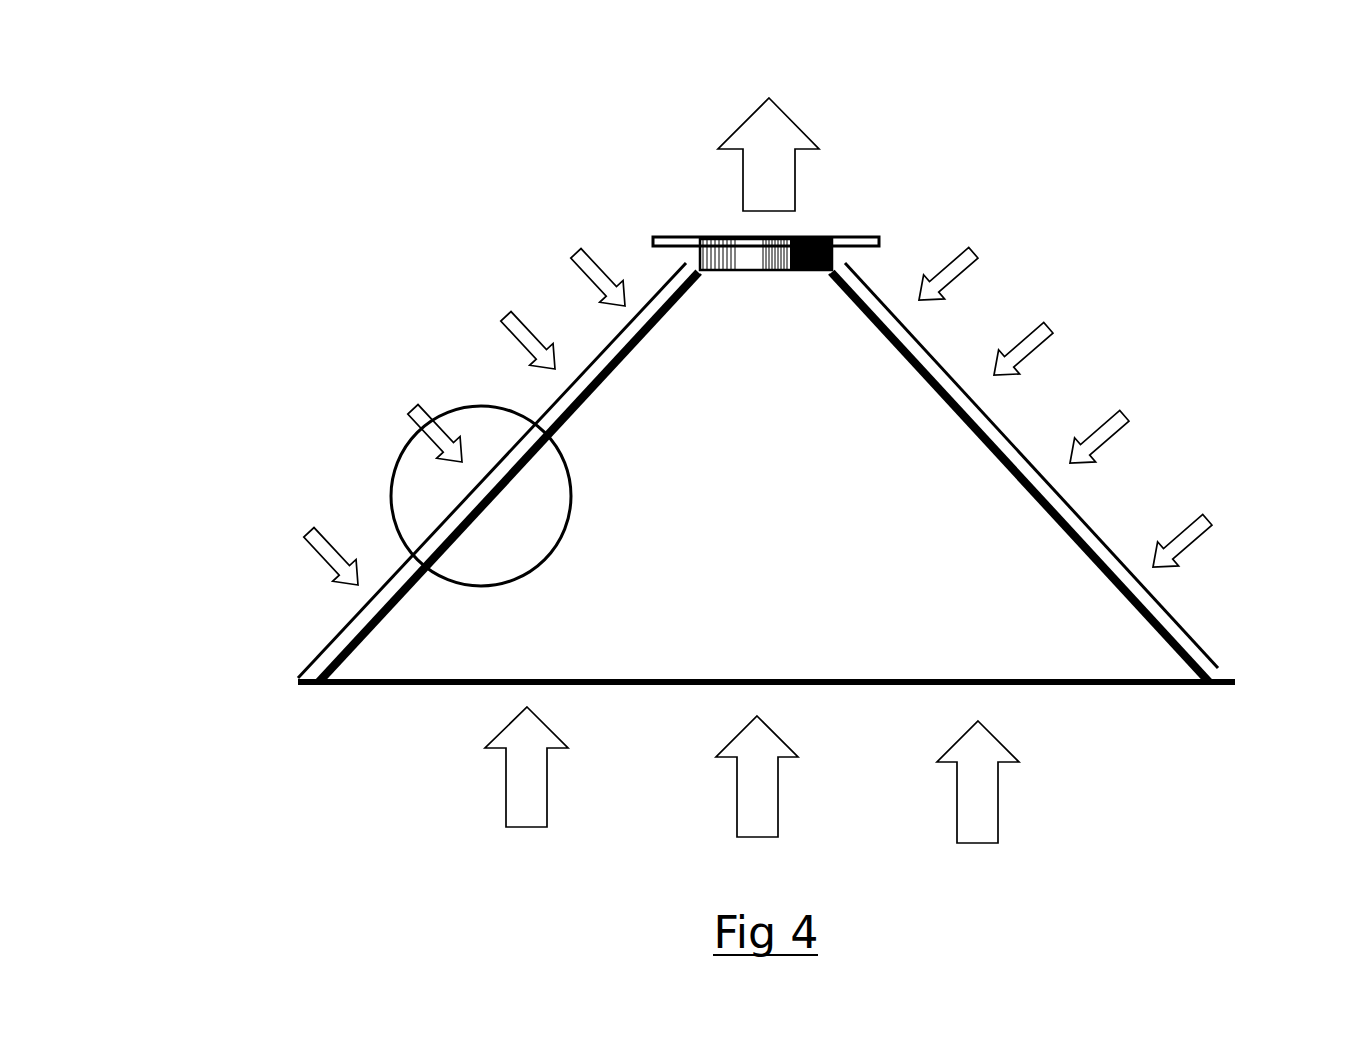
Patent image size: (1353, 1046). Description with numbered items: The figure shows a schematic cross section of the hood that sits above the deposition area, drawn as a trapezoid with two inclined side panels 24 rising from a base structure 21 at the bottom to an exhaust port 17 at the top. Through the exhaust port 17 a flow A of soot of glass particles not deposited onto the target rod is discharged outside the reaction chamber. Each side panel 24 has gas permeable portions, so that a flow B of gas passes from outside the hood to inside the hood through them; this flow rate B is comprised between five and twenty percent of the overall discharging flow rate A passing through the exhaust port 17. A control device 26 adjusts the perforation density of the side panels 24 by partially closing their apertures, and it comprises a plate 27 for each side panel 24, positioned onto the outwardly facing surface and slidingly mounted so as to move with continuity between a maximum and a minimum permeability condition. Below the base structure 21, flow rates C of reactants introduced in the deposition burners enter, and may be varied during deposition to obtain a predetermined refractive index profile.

The base structure 21 is at (699, 420).
The exhaust port 17 is at (710, 234).
The side panel 24 is at (408, 597).
The control device 26 is at (433, 530).
The plate 27 is at (598, 347).
The flow of soot A is at (800, 113).
The flow of gas B is at (500, 336).
The flow rates of reactants C is at (983, 832).